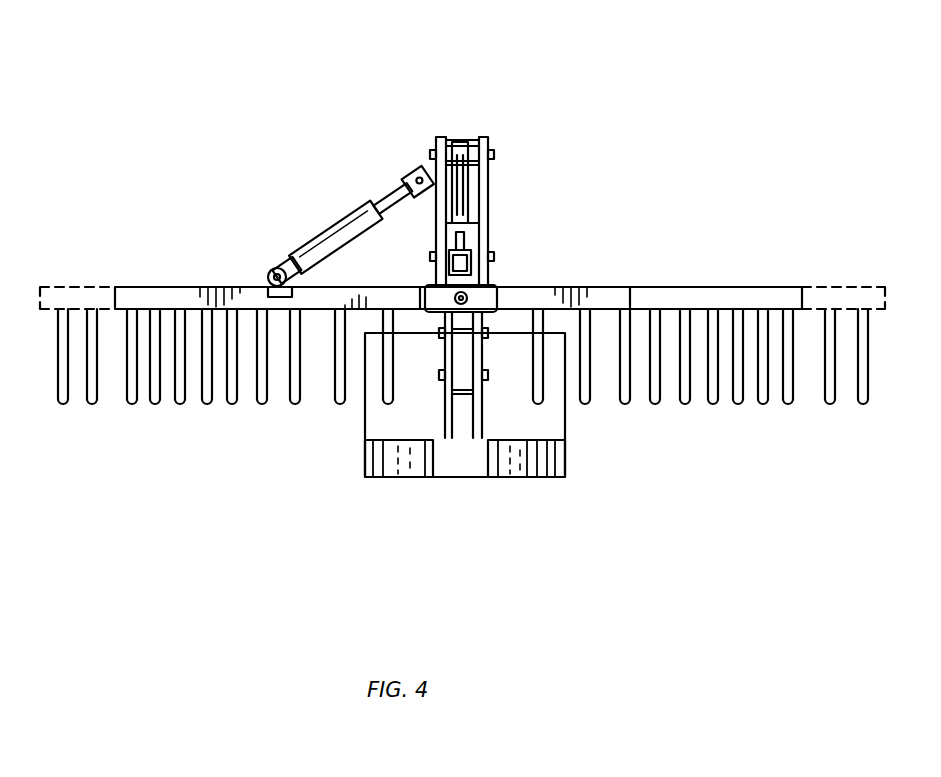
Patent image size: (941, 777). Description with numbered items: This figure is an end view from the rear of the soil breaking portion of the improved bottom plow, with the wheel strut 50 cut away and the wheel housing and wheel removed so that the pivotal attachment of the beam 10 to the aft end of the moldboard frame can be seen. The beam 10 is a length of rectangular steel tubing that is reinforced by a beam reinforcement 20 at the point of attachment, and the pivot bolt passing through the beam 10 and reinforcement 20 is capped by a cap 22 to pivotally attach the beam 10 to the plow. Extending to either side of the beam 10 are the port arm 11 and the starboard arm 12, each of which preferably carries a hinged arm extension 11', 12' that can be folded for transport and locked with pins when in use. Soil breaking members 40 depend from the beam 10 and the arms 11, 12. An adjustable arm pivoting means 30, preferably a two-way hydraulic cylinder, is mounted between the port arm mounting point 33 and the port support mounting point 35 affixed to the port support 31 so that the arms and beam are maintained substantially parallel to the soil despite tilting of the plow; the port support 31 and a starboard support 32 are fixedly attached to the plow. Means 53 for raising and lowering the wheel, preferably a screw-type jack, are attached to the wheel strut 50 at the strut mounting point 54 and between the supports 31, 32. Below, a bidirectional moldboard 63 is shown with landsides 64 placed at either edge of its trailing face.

The beam 10 is at (355, 287).
The port arm 11 is at (284, 272).
The hinged arm extension 11' is at (77, 256).
The starboard arm 12 is at (660, 275).
The hinged arm extension 12' is at (852, 275).
The beam reinforcement 20 is at (485, 317).
The cap 22 is at (432, 285).
The adjustable arm pivoting means 30 is at (340, 228).
The port support 31 is at (440, 137).
The starboard support 32 is at (490, 137).
The port arm mounting point 33 is at (272, 268).
The port support mounting point 35 is at (410, 150).
The soil breaking members 40 is at (95, 392).
The wheel strut 50 is at (470, 273).
The means for raising and lowering wheel 53 is at (475, 192).
The strut mounting point 54 is at (458, 140).
The bidirectional moldboard 63 is at (432, 419).
The landsides 64 is at (395, 470).